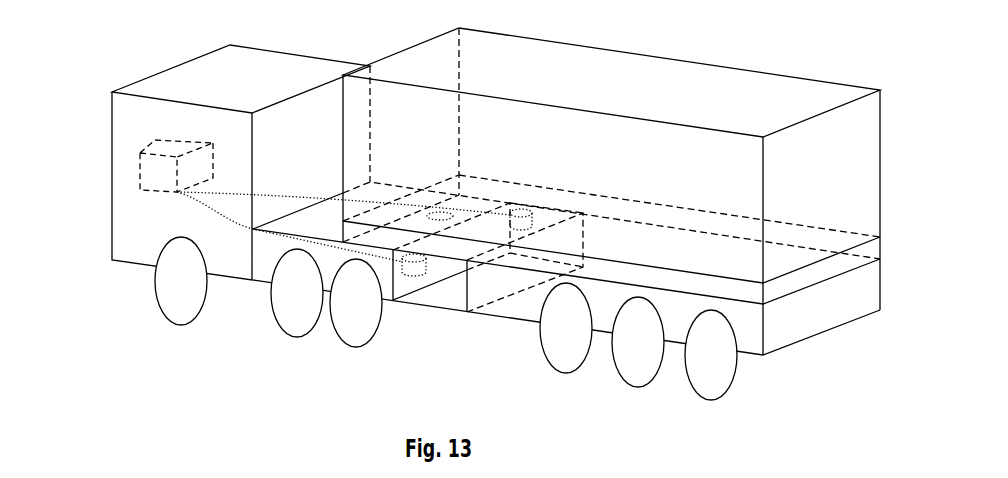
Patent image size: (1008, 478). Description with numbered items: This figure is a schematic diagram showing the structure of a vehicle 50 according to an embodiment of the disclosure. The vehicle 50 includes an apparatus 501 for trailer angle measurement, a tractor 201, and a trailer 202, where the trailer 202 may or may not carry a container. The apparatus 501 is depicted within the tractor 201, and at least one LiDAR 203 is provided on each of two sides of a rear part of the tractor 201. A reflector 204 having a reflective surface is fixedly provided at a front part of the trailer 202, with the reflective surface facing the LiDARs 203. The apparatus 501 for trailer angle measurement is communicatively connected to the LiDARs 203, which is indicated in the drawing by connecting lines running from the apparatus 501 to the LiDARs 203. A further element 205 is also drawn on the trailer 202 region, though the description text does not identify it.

The vehicle 50 is at (115, 70).
The tractor 201 is at (225, 67).
The trailer 202 is at (520, 305).
The LiDAR 203 is at (532, 221).
The reflector 204 is at (463, 303).
The sensor 205 is at (455, 215).
The apparatus for trailer angle measurement 501 is at (150, 170).